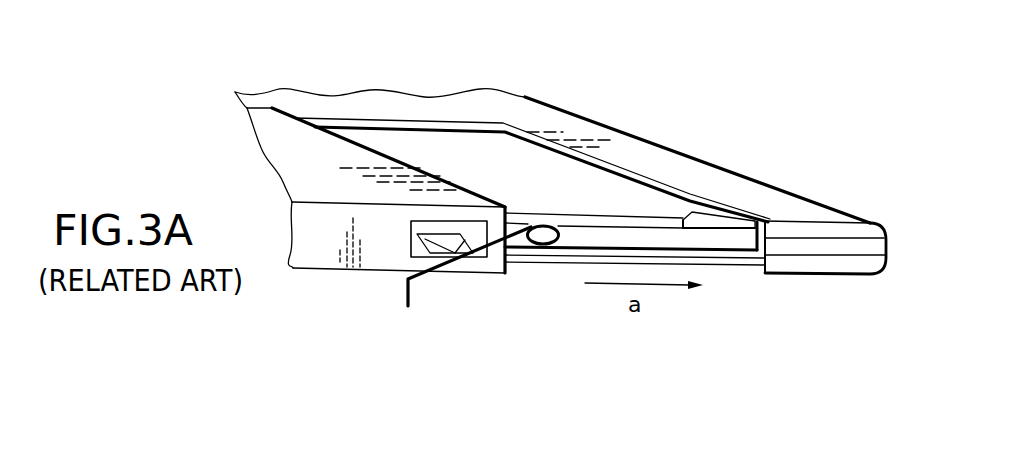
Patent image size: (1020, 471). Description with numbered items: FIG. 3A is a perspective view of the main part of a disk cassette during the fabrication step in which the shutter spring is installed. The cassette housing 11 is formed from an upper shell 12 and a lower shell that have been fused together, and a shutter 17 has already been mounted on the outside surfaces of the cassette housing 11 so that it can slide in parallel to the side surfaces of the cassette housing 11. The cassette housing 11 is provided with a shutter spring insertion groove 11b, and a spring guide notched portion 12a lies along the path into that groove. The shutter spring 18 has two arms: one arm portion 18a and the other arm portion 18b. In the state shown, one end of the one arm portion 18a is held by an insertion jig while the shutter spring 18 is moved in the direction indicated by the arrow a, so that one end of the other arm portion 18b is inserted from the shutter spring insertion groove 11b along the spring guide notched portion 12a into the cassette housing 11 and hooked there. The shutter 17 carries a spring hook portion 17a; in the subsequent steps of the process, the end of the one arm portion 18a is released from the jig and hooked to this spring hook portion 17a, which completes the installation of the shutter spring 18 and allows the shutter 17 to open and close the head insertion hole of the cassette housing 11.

The cassette housing 11 is at (607, 107).
The upper shell 12 is at (549, 118).
The shutter spring insertion groove 11b is at (625, 228).
The spring guide notched portion 12a is at (707, 215).
The shutter 17 is at (292, 155).
The spring hook portion 17a is at (412, 250).
The shutter spring 18 is at (543, 248).
The one arm portion 18a is at (421, 276).
The other arm portion 18b is at (738, 252).